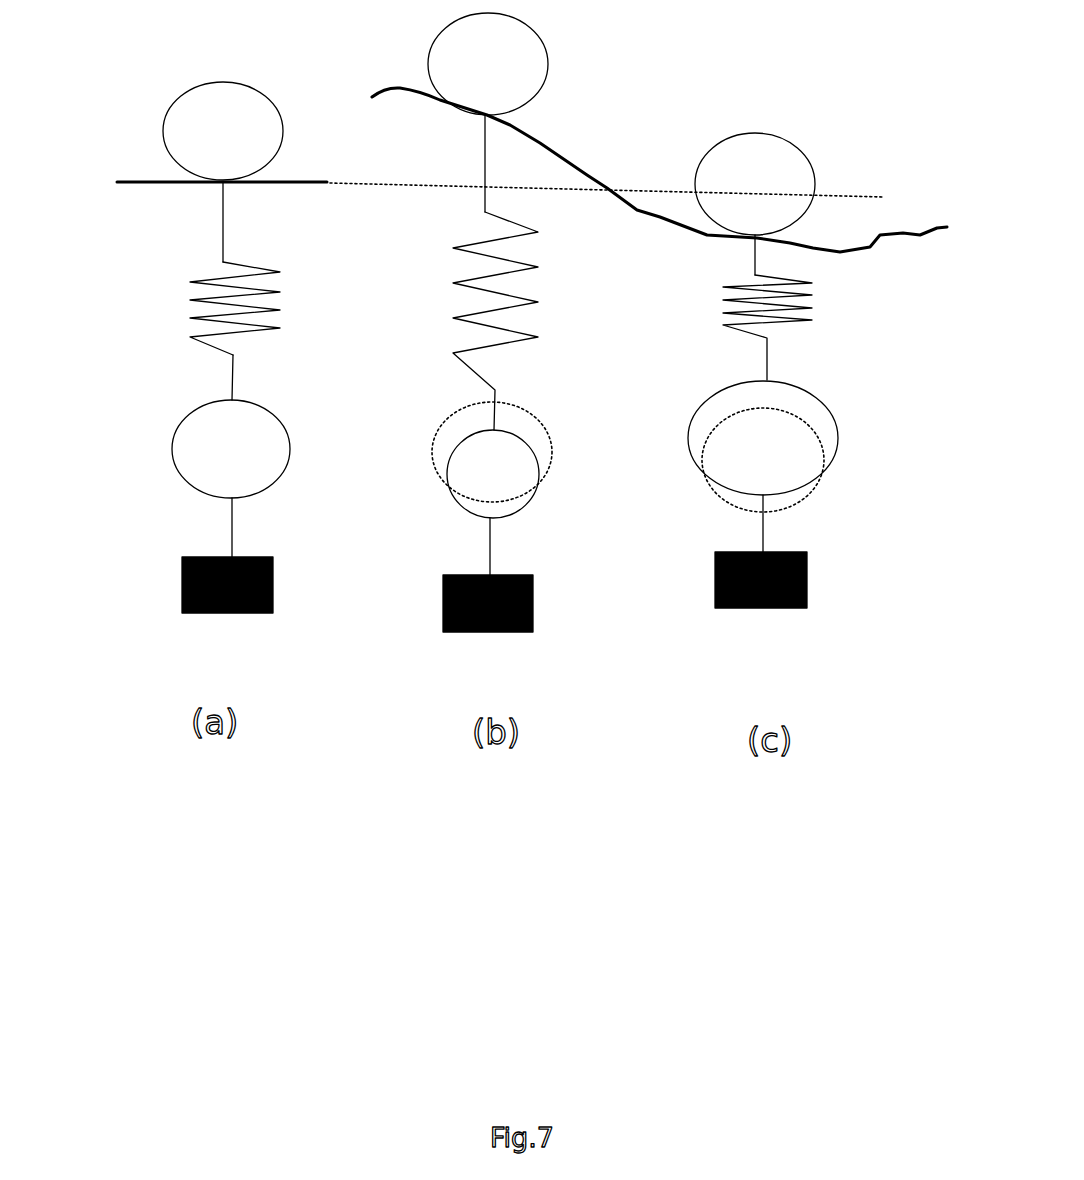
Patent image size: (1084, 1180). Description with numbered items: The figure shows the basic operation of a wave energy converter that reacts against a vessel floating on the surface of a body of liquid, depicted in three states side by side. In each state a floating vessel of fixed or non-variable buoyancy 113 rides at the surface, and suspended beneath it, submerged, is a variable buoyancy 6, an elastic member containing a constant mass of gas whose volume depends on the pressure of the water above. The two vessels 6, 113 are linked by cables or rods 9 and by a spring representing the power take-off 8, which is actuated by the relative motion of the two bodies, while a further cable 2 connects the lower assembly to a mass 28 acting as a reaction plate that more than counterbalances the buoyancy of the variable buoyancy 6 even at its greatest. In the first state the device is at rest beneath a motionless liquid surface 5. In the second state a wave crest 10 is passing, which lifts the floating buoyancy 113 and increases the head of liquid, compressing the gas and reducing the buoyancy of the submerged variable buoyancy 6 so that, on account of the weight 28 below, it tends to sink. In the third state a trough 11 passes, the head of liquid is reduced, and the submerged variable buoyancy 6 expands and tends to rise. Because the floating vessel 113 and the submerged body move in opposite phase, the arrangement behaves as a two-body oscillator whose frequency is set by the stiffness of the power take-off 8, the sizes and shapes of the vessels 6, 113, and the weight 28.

The liquid surface at rest 5 is at (128, 186).
The cables or rods 9 is at (223, 222).
The power take-off 8 is at (144, 314).
The variable buoyancy 6 is at (172, 450).
The cable 2 is at (232, 532).
The floating vessel of fixed buoyancy 113 is at (542, 35).
The wave crest 10 is at (440, 100).
The trough 11 is at (793, 238).
The mass 28 is at (807, 588).